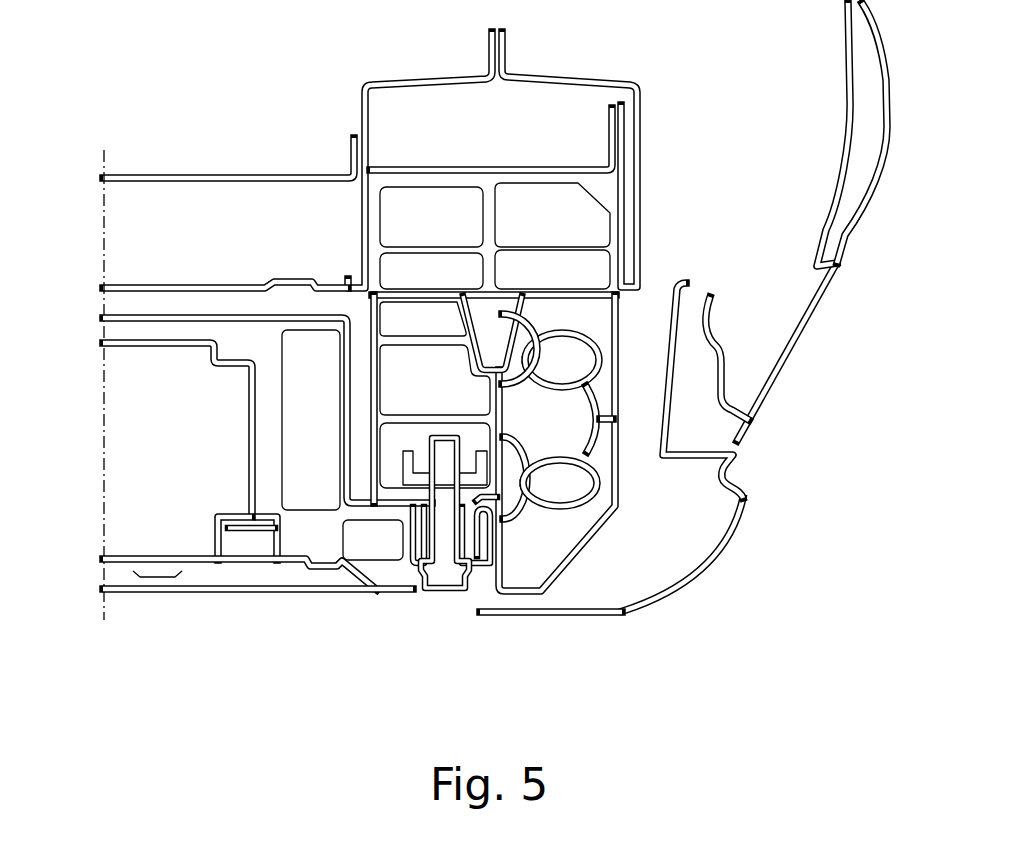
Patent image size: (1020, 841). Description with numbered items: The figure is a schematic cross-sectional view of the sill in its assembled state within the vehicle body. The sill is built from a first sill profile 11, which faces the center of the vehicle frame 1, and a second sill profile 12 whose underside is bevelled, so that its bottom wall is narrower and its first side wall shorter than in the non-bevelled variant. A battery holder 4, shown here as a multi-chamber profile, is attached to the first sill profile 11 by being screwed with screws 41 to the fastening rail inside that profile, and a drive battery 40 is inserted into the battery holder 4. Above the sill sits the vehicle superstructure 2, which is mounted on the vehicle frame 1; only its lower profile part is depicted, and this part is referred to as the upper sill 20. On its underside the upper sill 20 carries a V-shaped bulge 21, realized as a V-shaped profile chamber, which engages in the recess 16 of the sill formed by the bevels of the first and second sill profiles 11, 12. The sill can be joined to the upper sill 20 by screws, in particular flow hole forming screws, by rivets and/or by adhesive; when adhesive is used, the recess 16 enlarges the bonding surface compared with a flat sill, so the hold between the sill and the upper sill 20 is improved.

The vehicle frame 1 is at (652, 503).
The vehicle superstructure 2 is at (308, 125).
The battery holder 4 is at (378, 543).
The first sill profile 11 is at (377, 397).
The second sill profile 12 is at (588, 528).
The recess 16 is at (520, 358).
The upper sill 20 is at (578, 218).
The V-shaped bulge 21 is at (493, 309).
The drive battery 40 is at (195, 477).
The screws 41 is at (441, 573).